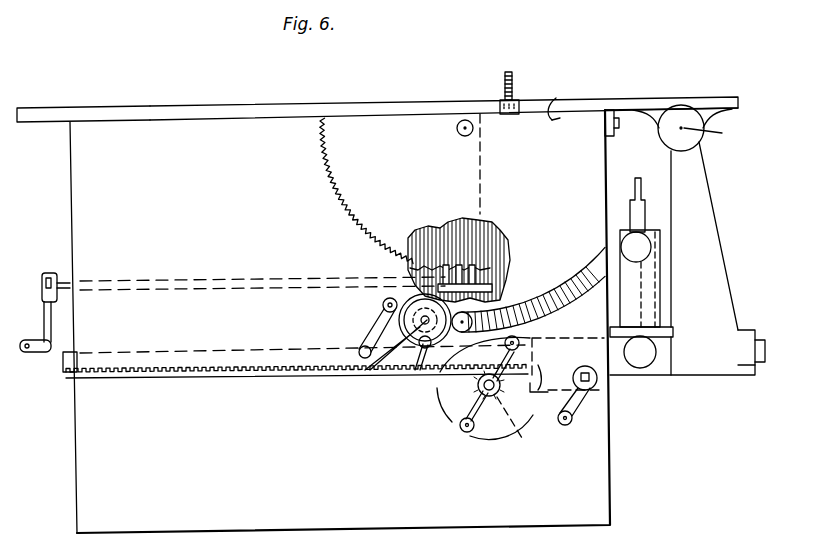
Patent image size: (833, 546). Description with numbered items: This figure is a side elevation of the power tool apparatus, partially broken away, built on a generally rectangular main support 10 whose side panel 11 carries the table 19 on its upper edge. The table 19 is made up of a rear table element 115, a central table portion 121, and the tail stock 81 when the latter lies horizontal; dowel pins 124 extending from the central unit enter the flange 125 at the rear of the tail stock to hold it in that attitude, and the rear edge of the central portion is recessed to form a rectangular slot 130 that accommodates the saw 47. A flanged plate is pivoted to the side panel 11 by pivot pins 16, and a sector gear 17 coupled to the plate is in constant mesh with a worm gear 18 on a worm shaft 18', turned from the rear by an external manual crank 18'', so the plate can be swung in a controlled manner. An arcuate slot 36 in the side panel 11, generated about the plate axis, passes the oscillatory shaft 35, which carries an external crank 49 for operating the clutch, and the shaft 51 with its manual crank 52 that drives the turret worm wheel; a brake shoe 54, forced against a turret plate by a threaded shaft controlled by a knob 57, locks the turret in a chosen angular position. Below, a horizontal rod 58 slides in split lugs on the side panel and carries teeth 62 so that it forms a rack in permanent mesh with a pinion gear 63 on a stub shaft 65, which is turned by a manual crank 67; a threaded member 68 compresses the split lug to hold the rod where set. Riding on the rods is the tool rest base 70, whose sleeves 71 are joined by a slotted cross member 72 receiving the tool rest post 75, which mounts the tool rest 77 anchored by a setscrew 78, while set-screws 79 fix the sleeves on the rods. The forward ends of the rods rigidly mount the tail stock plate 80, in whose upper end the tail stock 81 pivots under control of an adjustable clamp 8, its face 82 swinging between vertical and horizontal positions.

The adjustable clamp 8 is at (709, 136).
The main support 10 is at (88, 480).
The side panel 11 is at (87, 190).
The pivot pin 16 is at (465, 120).
The sector gear 17 is at (454, 238).
The worm gear 18 is at (490, 272).
The worm shaft 18' is at (302, 303).
The manual crank 18'' is at (36, 307).
The table 19 is at (244, 97).
The oscillatory shaft 35 is at (383, 306).
The arcuate slot 36 is at (577, 272).
The saw 47 is at (514, 72).
The crank 49 is at (368, 329).
The shaft 51 is at (395, 347).
The manual crank 52 is at (409, 370).
The brake shoe 54 is at (490, 291).
The knob 57 is at (470, 320).
The horizontal rod 58 is at (66, 371).
The teeth 62 is at (194, 380).
The pinion gear 63 is at (550, 400).
The stub shaft 65 is at (479, 388).
The manual crank 67 is at (460, 428).
The threaded member 68 is at (583, 374).
The tool rest base 70 is at (670, 352).
The sleeve 71 is at (667, 372).
The cross member 72 is at (649, 333).
The tool rest post 75 is at (652, 283).
The tool rest 77 is at (637, 180).
The setscrew 78 is at (650, 247).
The set-screw 79 is at (638, 368).
The tail stock plate 80 is at (703, 209).
The tail stock 81 is at (687, 85).
The face 82 is at (697, 101).
The rear table element 115 is at (99, 108).
The central table portion 121 is at (556, 144).
The dowel pin 124 is at (618, 126).
The flange 125 is at (606, 124).
The rectangular slot 130 is at (561, 97).